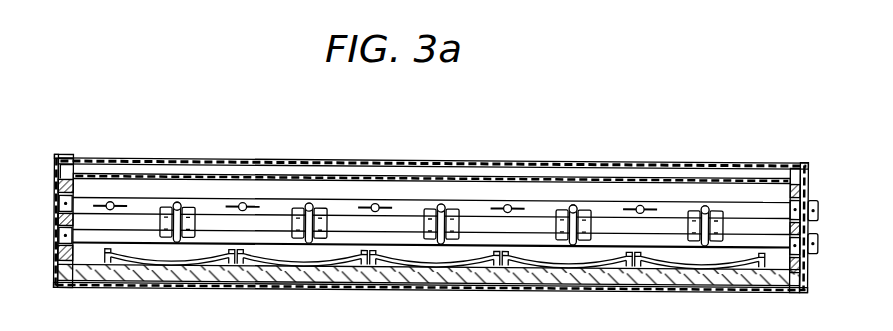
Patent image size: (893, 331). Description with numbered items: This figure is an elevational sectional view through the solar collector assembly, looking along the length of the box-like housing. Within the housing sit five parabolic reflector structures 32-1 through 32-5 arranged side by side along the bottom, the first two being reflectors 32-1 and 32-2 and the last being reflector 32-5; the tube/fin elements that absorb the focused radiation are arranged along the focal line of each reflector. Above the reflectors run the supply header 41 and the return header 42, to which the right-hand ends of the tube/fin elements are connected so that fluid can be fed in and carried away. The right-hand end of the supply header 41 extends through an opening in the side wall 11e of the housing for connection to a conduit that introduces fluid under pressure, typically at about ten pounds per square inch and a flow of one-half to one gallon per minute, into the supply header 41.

The supply header 41 is at (403, 202).
The return header 42 is at (413, 240).
The side wall 11e is at (808, 173).
The parabolic reflector structure 32-1 is at (218, 264).
The parabolic reflector structure 32-2 is at (287, 263).
The parabolic reflector structure 32-5 is at (736, 267).